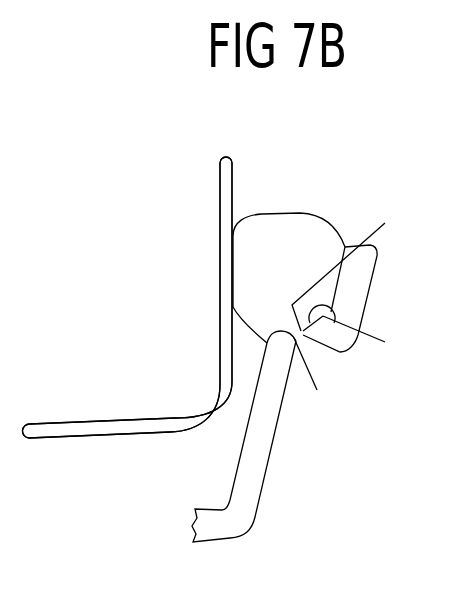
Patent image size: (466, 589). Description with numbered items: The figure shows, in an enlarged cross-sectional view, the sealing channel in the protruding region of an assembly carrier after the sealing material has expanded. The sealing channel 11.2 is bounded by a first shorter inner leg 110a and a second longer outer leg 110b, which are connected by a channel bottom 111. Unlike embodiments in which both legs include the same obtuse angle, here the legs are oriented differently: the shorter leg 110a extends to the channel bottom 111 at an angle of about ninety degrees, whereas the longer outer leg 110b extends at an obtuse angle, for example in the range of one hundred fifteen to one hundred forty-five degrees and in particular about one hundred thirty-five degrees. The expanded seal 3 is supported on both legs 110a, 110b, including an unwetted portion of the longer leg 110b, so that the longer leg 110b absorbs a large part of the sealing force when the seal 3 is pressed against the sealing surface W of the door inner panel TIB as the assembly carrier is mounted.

The seal 3 is at (328, 222).
The door inner panel TIB is at (219, 167).
The sealing surface W is at (224, 207).
The first shorter inner leg 110a is at (275, 352).
The second longer outer leg 110b is at (355, 280).
The channel bottom 111 is at (355, 265).
The sealing channel 11.2 is at (316, 336).